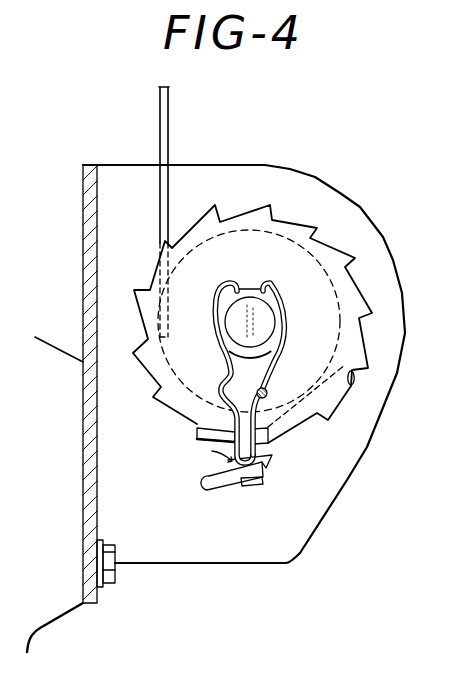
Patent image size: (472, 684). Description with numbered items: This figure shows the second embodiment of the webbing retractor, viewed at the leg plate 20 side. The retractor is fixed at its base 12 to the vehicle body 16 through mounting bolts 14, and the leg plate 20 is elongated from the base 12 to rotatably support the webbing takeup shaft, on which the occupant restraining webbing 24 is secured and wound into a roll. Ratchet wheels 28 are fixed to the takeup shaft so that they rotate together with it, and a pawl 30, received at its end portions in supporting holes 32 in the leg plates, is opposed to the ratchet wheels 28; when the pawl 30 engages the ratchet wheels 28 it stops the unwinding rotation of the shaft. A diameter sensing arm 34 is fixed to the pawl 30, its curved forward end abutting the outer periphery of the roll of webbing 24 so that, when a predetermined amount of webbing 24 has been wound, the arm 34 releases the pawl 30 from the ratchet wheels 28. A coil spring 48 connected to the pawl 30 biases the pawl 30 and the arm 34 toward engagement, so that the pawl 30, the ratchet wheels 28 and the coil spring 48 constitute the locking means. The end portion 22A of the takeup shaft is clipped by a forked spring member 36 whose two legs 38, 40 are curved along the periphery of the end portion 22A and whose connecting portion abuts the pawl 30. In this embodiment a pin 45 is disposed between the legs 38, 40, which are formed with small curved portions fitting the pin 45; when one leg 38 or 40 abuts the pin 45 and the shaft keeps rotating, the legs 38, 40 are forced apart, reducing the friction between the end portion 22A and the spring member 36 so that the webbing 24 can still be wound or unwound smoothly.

The base 12 is at (90, 612).
The mounting bolts 14 is at (117, 578).
The vehicle body 16 is at (59, 358).
The leg plate 20 is at (367, 235).
The end portion of the takeup shaft 22A is at (243, 292).
The occupant restraining webbing 24 is at (170, 131).
The ratchet wheels 28 is at (357, 293).
The pawl 30 is at (273, 462).
The supporting holes 32 is at (238, 490).
The diameter sensing arm 34 is at (356, 380).
The spring member 36 is at (197, 433).
The leg 38 is at (216, 303).
The leg 40 is at (281, 304).
The pin 45 is at (268, 390).
The coil spring 48 is at (248, 488).